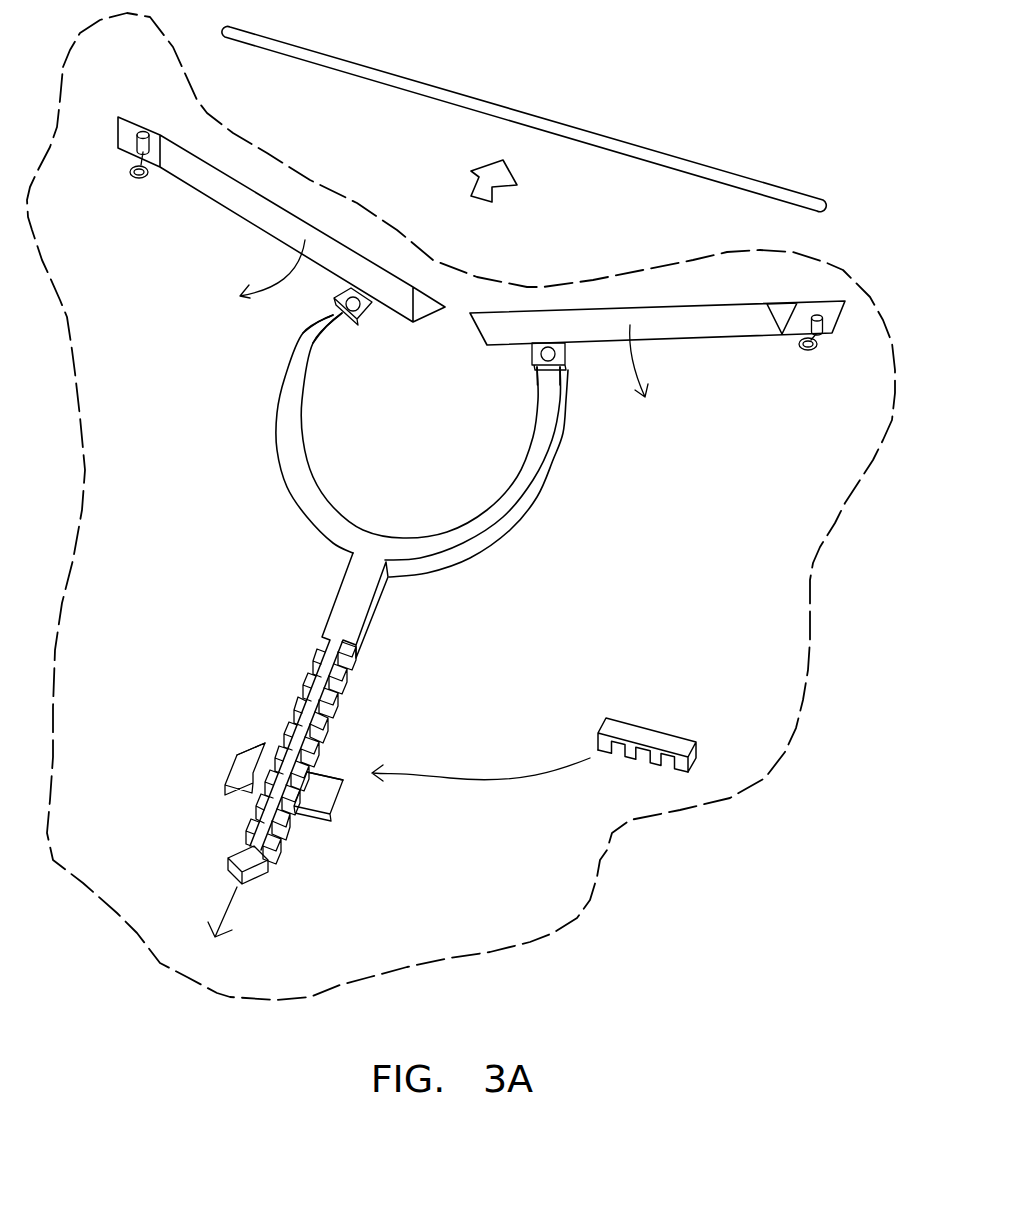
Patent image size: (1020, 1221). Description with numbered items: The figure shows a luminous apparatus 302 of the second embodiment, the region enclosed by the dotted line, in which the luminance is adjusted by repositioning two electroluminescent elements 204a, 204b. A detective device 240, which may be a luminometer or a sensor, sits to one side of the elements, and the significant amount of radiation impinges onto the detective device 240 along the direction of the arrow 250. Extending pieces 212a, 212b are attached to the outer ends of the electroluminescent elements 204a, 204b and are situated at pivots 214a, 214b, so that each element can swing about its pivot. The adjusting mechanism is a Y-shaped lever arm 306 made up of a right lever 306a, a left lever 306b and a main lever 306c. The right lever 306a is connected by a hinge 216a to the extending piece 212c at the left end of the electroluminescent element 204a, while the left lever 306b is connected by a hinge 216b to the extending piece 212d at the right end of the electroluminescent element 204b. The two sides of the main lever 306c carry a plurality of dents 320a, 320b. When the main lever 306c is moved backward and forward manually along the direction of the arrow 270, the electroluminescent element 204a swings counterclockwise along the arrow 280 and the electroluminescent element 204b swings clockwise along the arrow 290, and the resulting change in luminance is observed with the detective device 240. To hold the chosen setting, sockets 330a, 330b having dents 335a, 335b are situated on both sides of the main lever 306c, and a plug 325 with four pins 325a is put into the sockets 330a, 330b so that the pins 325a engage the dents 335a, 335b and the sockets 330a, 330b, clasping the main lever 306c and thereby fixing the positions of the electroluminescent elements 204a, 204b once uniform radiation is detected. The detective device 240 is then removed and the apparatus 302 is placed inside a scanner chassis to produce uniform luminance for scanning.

The electroluminescent element 204a is at (687, 323).
The electroluminescent element 204b is at (203, 193).
The extending piece 212a is at (838, 332).
The extending piece 212b is at (140, 128).
The extending piece 212c is at (562, 368).
The extending piece 212d is at (336, 303).
The pivot 214a is at (800, 343).
The pivot 214b is at (130, 165).
The hinge 216a is at (565, 372).
The hinge 216b is at (330, 318).
The detective device 240 is at (603, 138).
The arrow 250 is at (492, 200).
The arrow 270 is at (211, 930).
The arrow 280 is at (630, 362).
The arrow 290 is at (265, 278).
The luminous apparatus 302 is at (605, 850).
The lever arm 306 is at (355, 552).
The right lever 306a is at (507, 493).
The left lever 306b is at (283, 452).
The main lever 306c is at (340, 687).
The dents 320a is at (275, 845).
The dents 320b is at (242, 835).
The plug 325 is at (653, 740).
The pins 325a is at (630, 758).
The socket 330a is at (320, 805).
The socket 330b is at (240, 773).
The dents 335a is at (343, 790).
The dents 335b is at (252, 742).